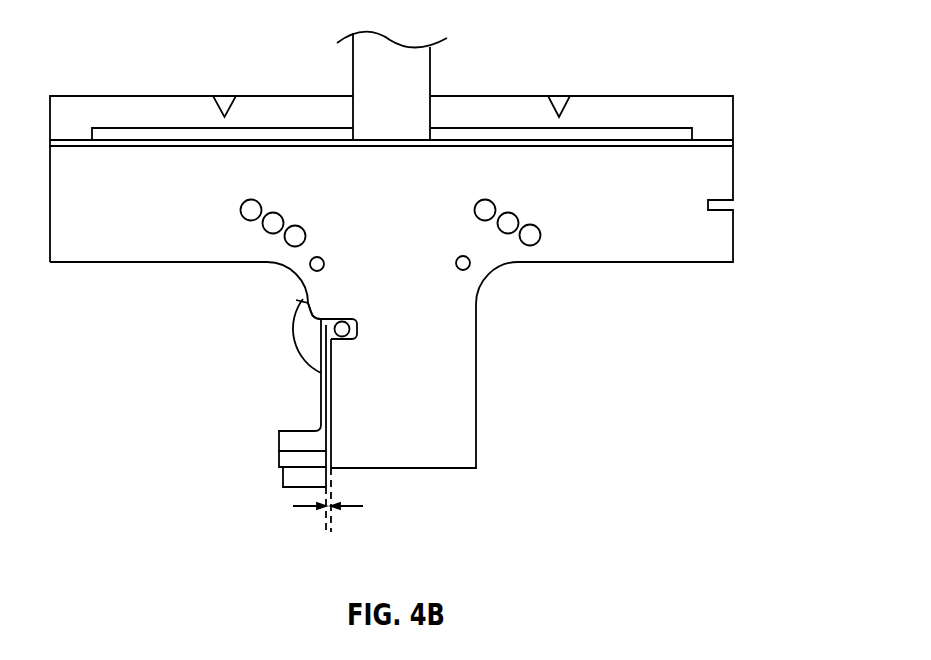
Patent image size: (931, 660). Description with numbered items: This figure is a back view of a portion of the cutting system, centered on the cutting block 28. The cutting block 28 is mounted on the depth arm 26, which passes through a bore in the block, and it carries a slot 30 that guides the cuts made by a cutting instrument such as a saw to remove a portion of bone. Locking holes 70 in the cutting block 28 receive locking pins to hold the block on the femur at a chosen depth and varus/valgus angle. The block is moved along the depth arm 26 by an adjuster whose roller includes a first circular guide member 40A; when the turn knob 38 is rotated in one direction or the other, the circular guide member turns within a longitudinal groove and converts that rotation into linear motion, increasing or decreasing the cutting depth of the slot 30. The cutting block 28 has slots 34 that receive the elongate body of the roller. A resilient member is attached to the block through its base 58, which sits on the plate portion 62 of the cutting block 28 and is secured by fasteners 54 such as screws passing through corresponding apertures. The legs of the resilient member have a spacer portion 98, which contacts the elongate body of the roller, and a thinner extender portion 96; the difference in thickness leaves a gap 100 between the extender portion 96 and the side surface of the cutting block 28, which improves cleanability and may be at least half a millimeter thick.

The depth arm 26 is at (418, 75).
The cutting block 28 is at (720, 122).
The slot 30 is at (618, 137).
The locking holes 70 is at (485, 207).
The first circular guide member 40A is at (295, 315).
The slots 34 is at (352, 323).
The turn knob 38 is at (347, 341).
The spacer portion 98 is at (322, 328).
The extender portion 96 is at (323, 393).
The base 58 is at (281, 441).
The plate portion 62 is at (286, 462).
The fasteners 54 is at (285, 478).
The gap width 100 is at (355, 507).